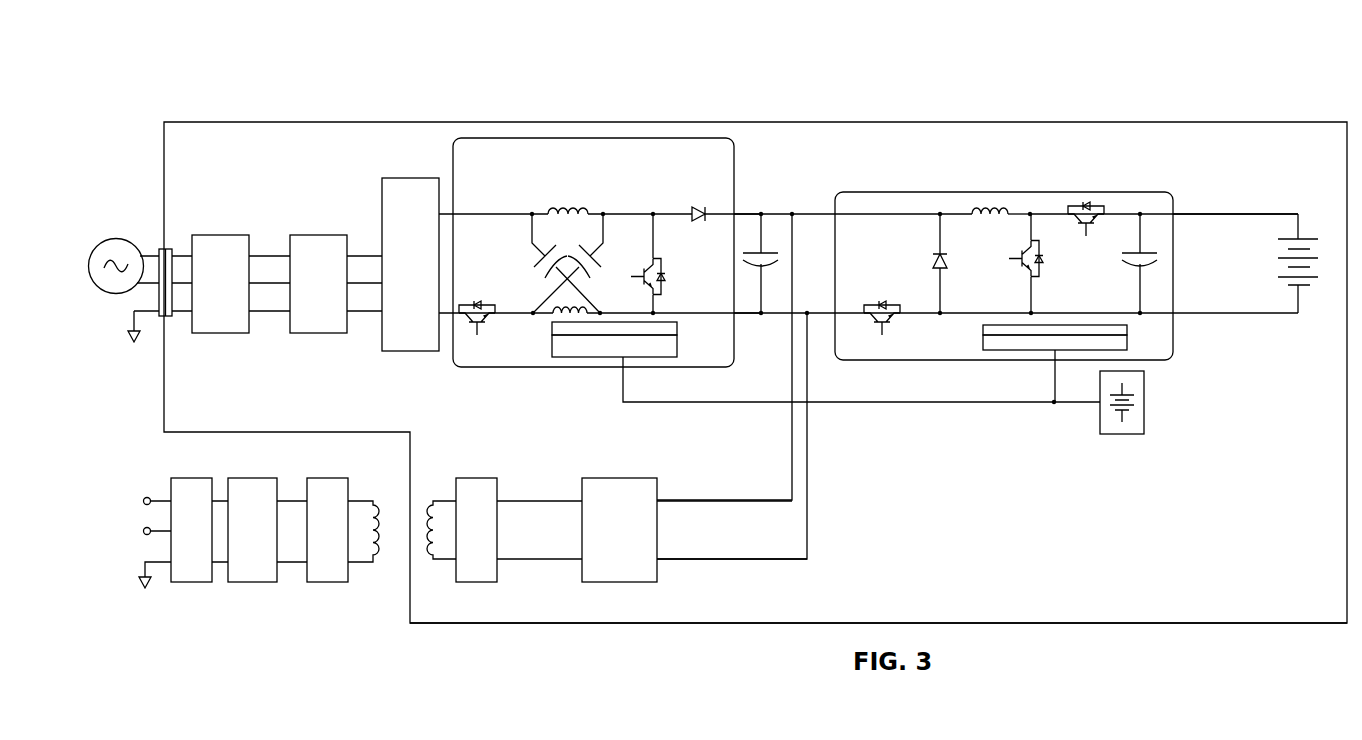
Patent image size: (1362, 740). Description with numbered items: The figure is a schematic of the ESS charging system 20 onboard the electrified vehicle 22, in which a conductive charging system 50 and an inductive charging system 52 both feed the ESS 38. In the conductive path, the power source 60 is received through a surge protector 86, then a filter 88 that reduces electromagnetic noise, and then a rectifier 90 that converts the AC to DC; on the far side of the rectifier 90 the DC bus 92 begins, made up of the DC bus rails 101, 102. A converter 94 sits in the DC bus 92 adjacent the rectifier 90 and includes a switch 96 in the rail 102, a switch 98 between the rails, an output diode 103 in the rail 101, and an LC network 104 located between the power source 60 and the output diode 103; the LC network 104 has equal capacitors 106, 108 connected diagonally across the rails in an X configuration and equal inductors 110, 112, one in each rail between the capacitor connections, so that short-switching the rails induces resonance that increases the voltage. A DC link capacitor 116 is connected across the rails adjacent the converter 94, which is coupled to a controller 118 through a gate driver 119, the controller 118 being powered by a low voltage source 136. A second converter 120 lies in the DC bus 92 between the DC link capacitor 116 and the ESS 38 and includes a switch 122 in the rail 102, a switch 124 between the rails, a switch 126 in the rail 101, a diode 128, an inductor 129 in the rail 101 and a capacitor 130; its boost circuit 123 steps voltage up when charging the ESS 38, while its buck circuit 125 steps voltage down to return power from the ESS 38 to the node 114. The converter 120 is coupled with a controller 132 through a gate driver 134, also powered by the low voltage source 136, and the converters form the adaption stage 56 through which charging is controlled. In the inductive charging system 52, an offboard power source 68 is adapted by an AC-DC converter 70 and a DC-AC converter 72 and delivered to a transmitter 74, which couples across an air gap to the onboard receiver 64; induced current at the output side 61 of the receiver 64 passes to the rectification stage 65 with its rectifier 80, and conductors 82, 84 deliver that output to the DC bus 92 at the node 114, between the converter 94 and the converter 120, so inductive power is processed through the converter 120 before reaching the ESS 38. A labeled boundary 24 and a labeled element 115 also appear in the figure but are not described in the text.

The ESS charging system 20 is at (1012, 529).
The vehicle 22 is at (1002, 84).
The DC-DC converter 24 is at (1088, 122).
The ESS 38 is at (1302, 239).
The conductive charging system 50 is at (262, 215).
The inductive charging system 52 is at (822, 524).
The adaption stage 56 is at (862, 139).
The power source 60 is at (128, 238).
The output side 61 is at (504, 576).
The receiver 64 is at (459, 587).
The rectification stage 65 is at (619, 587).
The power source 68 is at (162, 572).
The AC-DC converter 70 is at (182, 540).
The DC-AC converter 72 is at (242, 540).
The transmitter 74 is at (353, 587).
The rectifier 80 is at (610, 540).
The conductor 82 is at (788, 476).
The conductor 84 is at (807, 460).
The surge protector 86 is at (210, 294).
The filter 88 is at (308, 294).
The rectifier 90 is at (400, 262).
The DC bus 92 is at (447, 212).
The converter 94 is at (660, 138).
The switch 96 is at (478, 334).
The switch 98 is at (660, 296).
The DC bus rail 101 is at (1192, 213).
The DC bus rail 102 is at (1197, 315).
The output diode 103 is at (699, 206).
The LC network 104 is at (545, 202).
The capacitor 106 is at (534, 266).
The capacitor 108 is at (600, 256).
The inductor 110 is at (570, 209).
The inductor 112 is at (552, 315).
The node 114 is at (795, 201).
The diode 115 is at (692, 237).
The DC link capacitor 116 is at (763, 251).
The controller 118 is at (603, 358).
The gate driver 119 is at (552, 330).
The second converter 120 is at (977, 192).
The switch 122 is at (882, 325).
The boost circuit 123 is at (1023, 211).
The switch 124 is at (1027, 262).
The buck circuit 125 is at (1034, 289).
The switch 126 is at (1075, 228).
The diode 128 is at (935, 257).
The inductor 129 is at (992, 206).
The capacitor 130 is at (1123, 251).
The controller 132 is at (1032, 342).
The gate driver 134 is at (985, 330).
The low voltage source 136 is at (1118, 435).